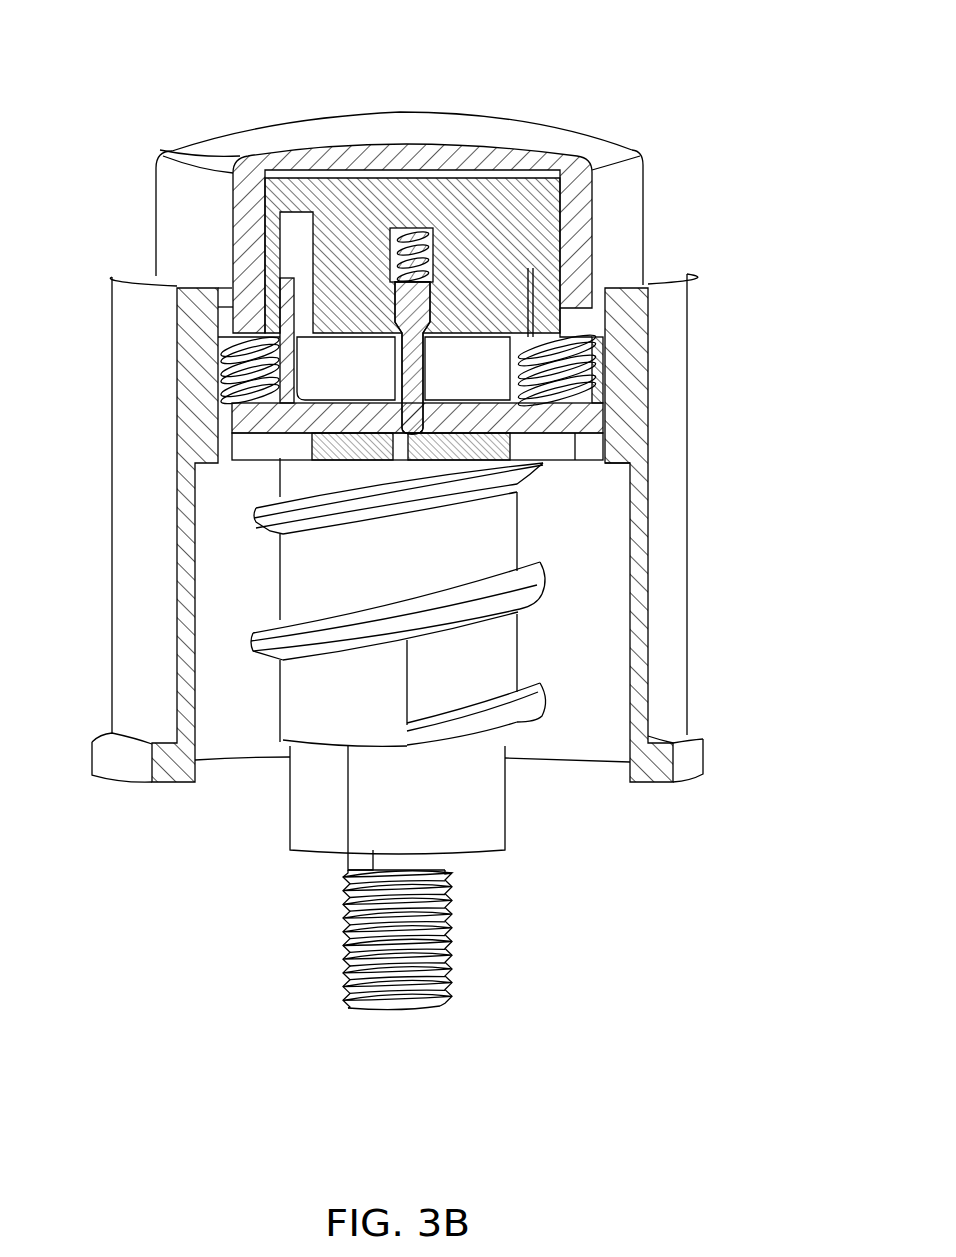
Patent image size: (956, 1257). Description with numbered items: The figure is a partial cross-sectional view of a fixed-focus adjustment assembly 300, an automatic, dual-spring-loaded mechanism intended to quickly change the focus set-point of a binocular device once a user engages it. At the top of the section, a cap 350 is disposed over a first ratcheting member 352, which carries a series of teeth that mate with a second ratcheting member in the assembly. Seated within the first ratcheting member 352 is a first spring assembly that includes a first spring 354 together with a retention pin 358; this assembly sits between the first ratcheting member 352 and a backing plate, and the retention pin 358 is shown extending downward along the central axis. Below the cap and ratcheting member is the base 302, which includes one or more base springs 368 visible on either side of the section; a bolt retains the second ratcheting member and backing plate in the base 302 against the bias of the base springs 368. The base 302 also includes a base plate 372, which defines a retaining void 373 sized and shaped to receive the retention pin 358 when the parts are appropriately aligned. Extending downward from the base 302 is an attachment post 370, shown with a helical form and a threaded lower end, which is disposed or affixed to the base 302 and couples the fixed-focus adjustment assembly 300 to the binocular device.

The fixed-focus adjustment assembly 300 is at (141, 39).
The base 302 is at (137, 658).
The cap 350 is at (166, 157).
The first ratcheting member 352 is at (530, 205).
The first spring 354 is at (400, 258).
The retention pin 358 is at (410, 387).
The base springs 368 is at (595, 385).
The attachment post 370 is at (507, 712).
The base plate 372 is at (550, 452).
The retaining void 373 is at (400, 452).